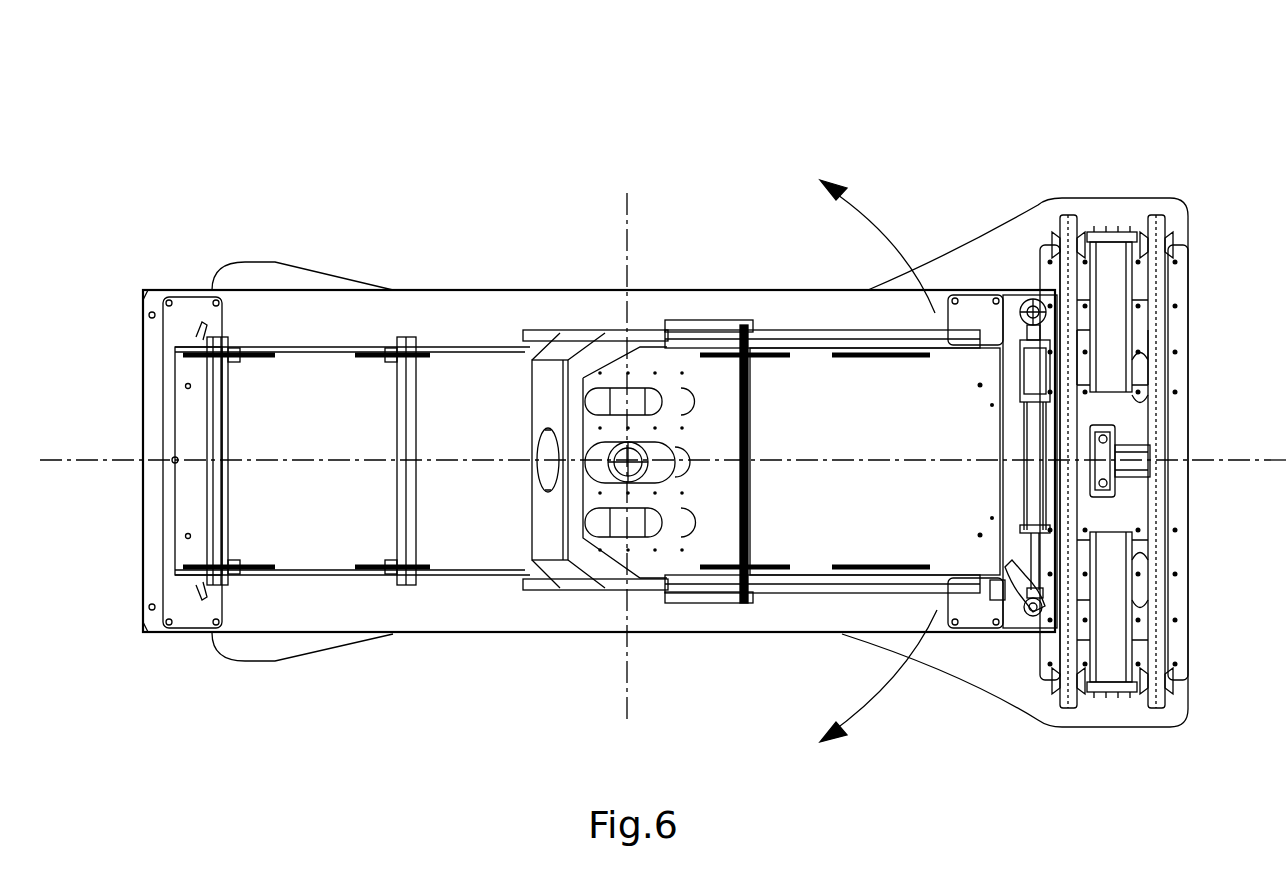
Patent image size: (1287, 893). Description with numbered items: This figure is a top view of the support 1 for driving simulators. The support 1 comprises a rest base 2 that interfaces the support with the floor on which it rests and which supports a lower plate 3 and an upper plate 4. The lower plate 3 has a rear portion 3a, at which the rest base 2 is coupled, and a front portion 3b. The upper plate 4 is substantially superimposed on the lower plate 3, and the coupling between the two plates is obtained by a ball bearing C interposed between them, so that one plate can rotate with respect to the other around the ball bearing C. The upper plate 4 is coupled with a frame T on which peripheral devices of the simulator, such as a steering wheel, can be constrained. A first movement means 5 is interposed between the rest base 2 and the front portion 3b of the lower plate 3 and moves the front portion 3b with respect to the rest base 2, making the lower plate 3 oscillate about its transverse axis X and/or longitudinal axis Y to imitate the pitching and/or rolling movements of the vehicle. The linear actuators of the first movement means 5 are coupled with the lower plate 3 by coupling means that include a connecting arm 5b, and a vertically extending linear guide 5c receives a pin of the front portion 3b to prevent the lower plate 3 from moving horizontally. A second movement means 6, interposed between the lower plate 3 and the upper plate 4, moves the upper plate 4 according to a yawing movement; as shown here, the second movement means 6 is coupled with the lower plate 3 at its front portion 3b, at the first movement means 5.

The support 1 is at (343, 170).
The rest base 2 is at (247, 648).
The lower plate 3 is at (272, 318).
The rear portion 3a is at (342, 608).
The front portion 3b is at (888, 312).
The upper plate 4 is at (480, 400).
The first movement means 5 is at (1113, 208).
The connecting arm 5b is at (1112, 297).
The linear guide 5c is at (1137, 457).
The second movement means 6 is at (1027, 352).
The frame T is at (598, 350).
The ball bearing C is at (652, 445).
The transverse axis X is at (628, 212).
The longitudinal axis Y is at (1262, 462).